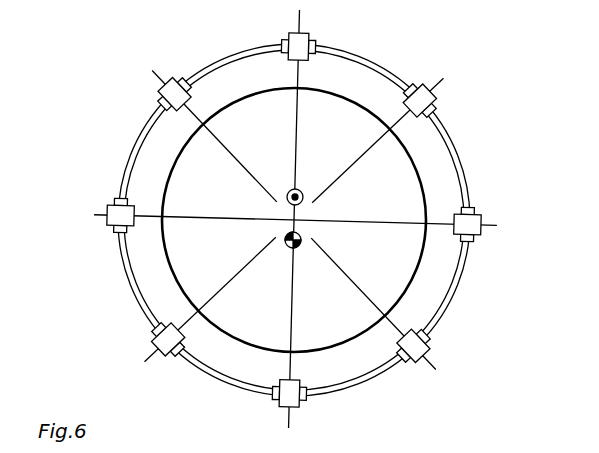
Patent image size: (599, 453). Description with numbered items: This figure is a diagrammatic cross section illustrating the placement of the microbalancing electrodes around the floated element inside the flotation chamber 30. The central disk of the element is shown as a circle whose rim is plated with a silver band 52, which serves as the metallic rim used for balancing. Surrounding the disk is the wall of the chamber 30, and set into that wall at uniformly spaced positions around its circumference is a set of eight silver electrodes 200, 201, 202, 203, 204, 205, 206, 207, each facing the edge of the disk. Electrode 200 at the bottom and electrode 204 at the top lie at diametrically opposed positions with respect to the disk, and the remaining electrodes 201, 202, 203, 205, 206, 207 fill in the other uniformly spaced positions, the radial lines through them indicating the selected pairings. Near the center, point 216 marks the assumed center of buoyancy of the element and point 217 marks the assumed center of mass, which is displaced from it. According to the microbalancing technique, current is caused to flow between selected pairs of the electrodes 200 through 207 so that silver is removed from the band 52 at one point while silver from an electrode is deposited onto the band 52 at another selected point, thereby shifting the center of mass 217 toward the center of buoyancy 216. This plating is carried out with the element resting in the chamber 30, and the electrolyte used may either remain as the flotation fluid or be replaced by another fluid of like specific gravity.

The flotation chamber 30 is at (227, 384).
The silver band 52 is at (425, 245).
The electrode 200 is at (297, 398).
The electrode 201 is at (425, 347).
The electrode 202 is at (476, 224).
The electrode 203 is at (428, 104).
The electrode 204 is at (303, 42).
The electrode 205 is at (165, 92).
The electrode 206 is at (112, 211).
The electrode 207 is at (163, 338).
The center of buoyancy point 216 is at (290, 191).
The center of mass point 217 is at (289, 247).